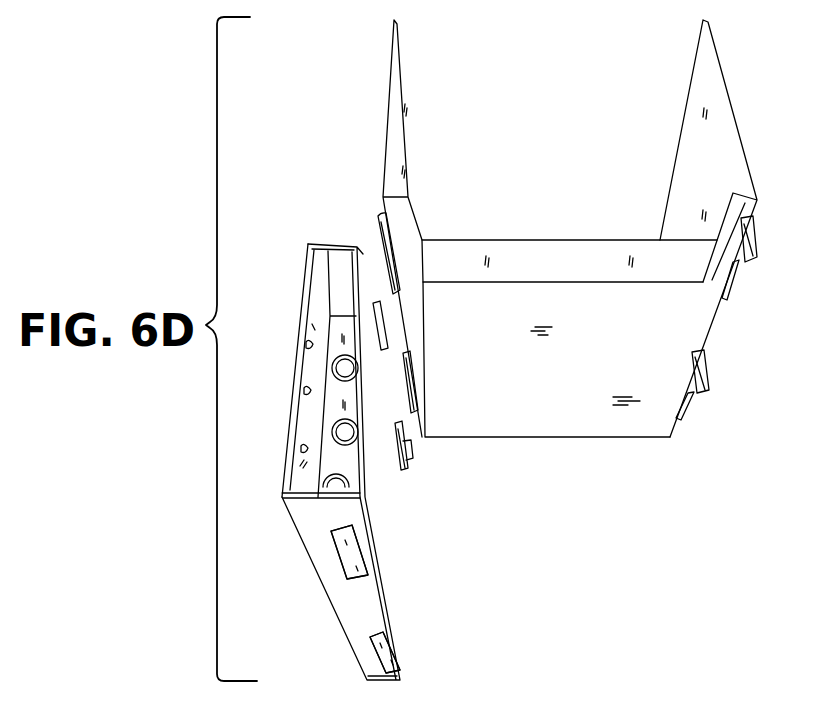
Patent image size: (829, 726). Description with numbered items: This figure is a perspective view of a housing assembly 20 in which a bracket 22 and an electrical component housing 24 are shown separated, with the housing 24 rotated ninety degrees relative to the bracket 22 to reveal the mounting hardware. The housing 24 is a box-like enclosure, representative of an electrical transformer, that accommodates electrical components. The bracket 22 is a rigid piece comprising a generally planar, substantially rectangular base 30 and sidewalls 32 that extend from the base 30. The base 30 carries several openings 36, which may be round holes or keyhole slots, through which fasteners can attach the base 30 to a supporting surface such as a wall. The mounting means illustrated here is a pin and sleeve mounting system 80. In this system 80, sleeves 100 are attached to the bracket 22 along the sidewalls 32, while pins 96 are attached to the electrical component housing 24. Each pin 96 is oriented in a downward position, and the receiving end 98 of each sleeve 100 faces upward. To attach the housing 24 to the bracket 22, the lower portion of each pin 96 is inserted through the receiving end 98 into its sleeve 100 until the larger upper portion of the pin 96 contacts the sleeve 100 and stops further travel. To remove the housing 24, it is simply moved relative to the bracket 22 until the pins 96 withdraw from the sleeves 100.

The housing assembly 20 is at (513, 305).
The bracket 22 is at (320, 436).
The electrical component housing 24 is at (358, 108).
The base 30 is at (312, 310).
The sidewalls 32 is at (337, 253).
The openings 36 is at (308, 380).
The pin and sleeve mounting system 80 is at (418, 425).
The pin 96 is at (381, 222).
The receiving end 98 is at (330, 543).
The sleeve 100 is at (383, 330).